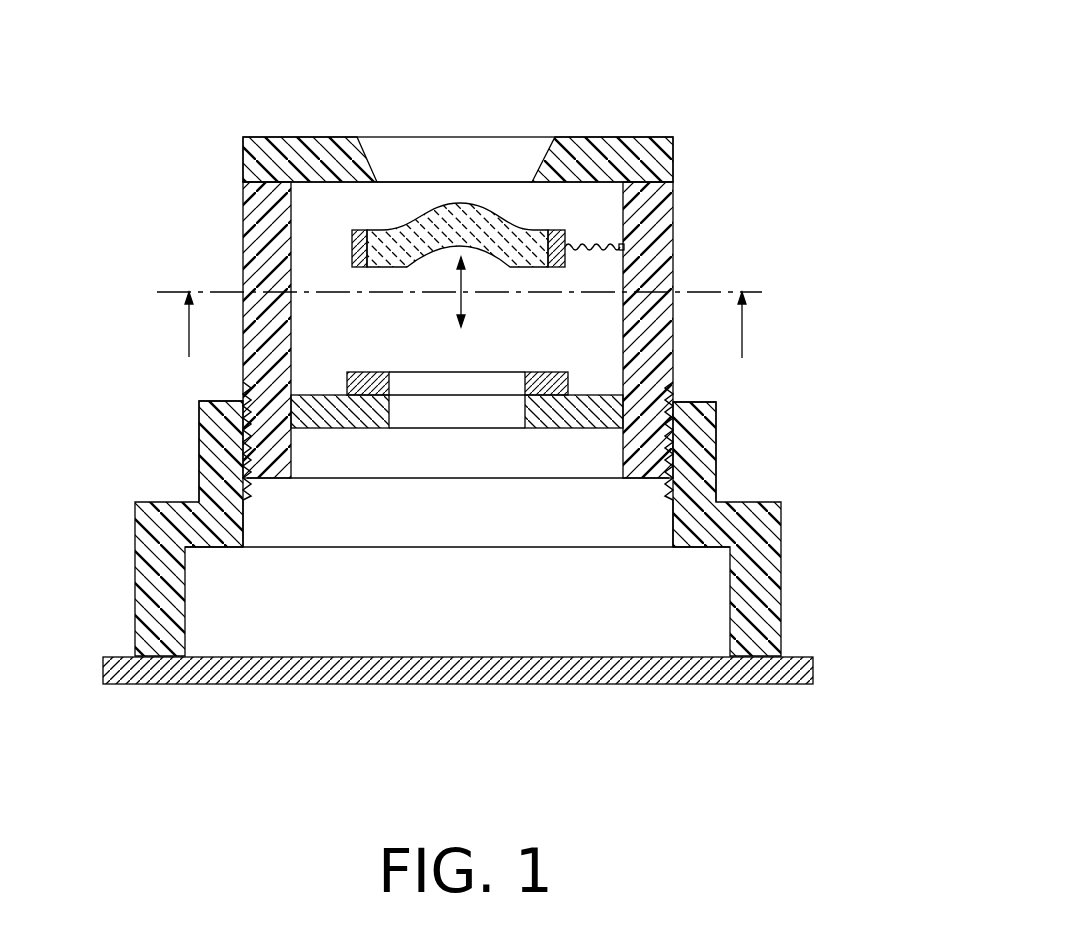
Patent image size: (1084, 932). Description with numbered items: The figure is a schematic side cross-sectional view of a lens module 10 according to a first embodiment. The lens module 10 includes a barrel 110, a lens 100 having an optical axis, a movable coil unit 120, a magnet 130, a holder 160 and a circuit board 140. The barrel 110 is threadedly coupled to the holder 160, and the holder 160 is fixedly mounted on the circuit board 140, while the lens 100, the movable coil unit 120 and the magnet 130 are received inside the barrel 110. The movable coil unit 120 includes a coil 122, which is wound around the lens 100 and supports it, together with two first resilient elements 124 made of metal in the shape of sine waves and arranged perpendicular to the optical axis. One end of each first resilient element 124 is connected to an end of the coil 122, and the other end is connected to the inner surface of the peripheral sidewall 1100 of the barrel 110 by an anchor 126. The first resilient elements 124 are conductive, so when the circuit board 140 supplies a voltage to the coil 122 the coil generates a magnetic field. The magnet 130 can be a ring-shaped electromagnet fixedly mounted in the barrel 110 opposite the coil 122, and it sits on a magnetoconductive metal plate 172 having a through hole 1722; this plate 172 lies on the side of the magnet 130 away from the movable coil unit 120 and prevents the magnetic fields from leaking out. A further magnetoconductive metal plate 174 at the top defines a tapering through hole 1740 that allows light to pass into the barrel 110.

The lens module 10 is at (490, 342).
The lens 100 is at (457, 217).
The barrel 110 is at (277, 228).
The peripheral sidewall 1100 is at (313, 270).
The movable coil unit 120 is at (793, 165).
The coil 122 is at (565, 238).
The first resilient element 124 is at (603, 247).
The anchor 126 is at (640, 265).
The magnet 130 is at (562, 381).
The circuit board 140 is at (793, 665).
The holder 160 is at (757, 562).
The magnetoconductive metal plate 172 is at (578, 413).
The through hole 1722 is at (430, 412).
The magnetoconductive metal plate 174 is at (598, 162).
The tapering through hole 1740 is at (425, 154).